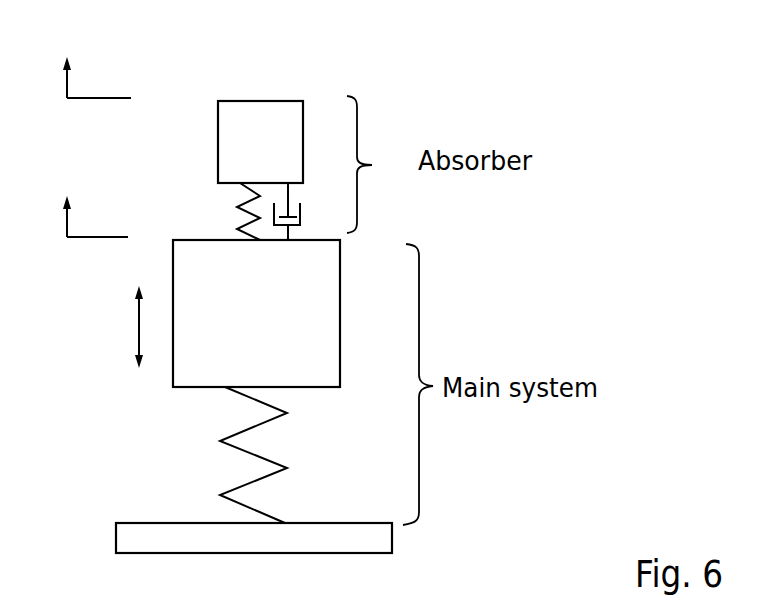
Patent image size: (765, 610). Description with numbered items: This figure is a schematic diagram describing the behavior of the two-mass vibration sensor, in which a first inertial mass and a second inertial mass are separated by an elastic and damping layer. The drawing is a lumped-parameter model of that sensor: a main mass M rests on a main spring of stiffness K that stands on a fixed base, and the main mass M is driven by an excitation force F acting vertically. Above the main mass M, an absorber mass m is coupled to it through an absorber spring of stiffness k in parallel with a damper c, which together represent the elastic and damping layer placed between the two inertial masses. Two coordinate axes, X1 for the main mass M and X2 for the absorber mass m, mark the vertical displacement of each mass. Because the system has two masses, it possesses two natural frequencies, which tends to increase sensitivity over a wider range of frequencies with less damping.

The displacement coordinate of absorber mass X2 is at (78, 70).
The displacement coordinate of main mass X1 is at (77, 210).
The absorber mass m is at (260, 142).
The absorber spring stiffness k is at (231, 211).
The absorber damper c is at (302, 211).
The main system mass M is at (256, 313).
The excitation force F is at (120, 327).
The main system spring stiffness K is at (234, 455).